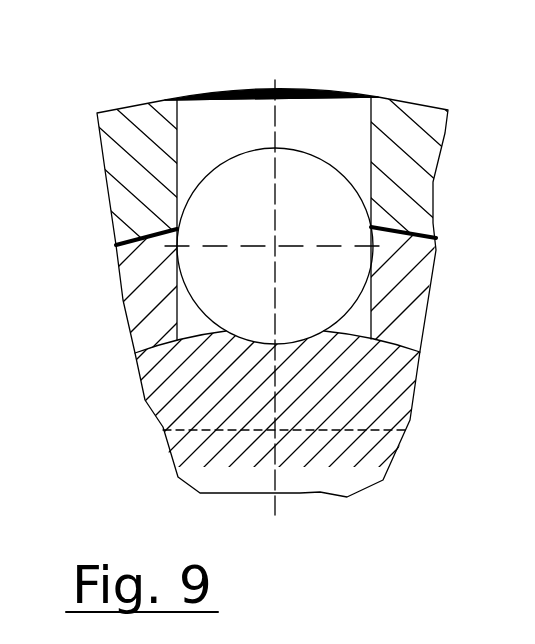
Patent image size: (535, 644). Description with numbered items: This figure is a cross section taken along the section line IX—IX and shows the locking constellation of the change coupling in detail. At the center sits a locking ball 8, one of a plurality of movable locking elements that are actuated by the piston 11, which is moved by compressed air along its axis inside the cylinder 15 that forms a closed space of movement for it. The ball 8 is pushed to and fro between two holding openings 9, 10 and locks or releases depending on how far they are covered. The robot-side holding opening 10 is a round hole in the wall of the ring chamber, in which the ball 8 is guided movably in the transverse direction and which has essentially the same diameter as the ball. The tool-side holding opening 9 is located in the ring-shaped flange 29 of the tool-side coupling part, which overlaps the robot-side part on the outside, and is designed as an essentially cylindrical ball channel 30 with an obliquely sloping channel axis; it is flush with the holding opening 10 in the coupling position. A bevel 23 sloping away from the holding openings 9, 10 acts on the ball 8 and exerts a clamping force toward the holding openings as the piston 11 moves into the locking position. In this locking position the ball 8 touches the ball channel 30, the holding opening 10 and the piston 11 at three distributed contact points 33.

The locking ball 8 is at (307, 148).
The holding opening 9 is at (271, 63).
The ball channel 30 is at (226, 127).
The holding opening 10 is at (362, 318).
The piston 11 is at (160, 397).
The cylinder 15 is at (142, 310).
The bevel 23 is at (308, 338).
The ring-shaped flange 29 is at (113, 157).
The contact points 33 is at (275, 330).